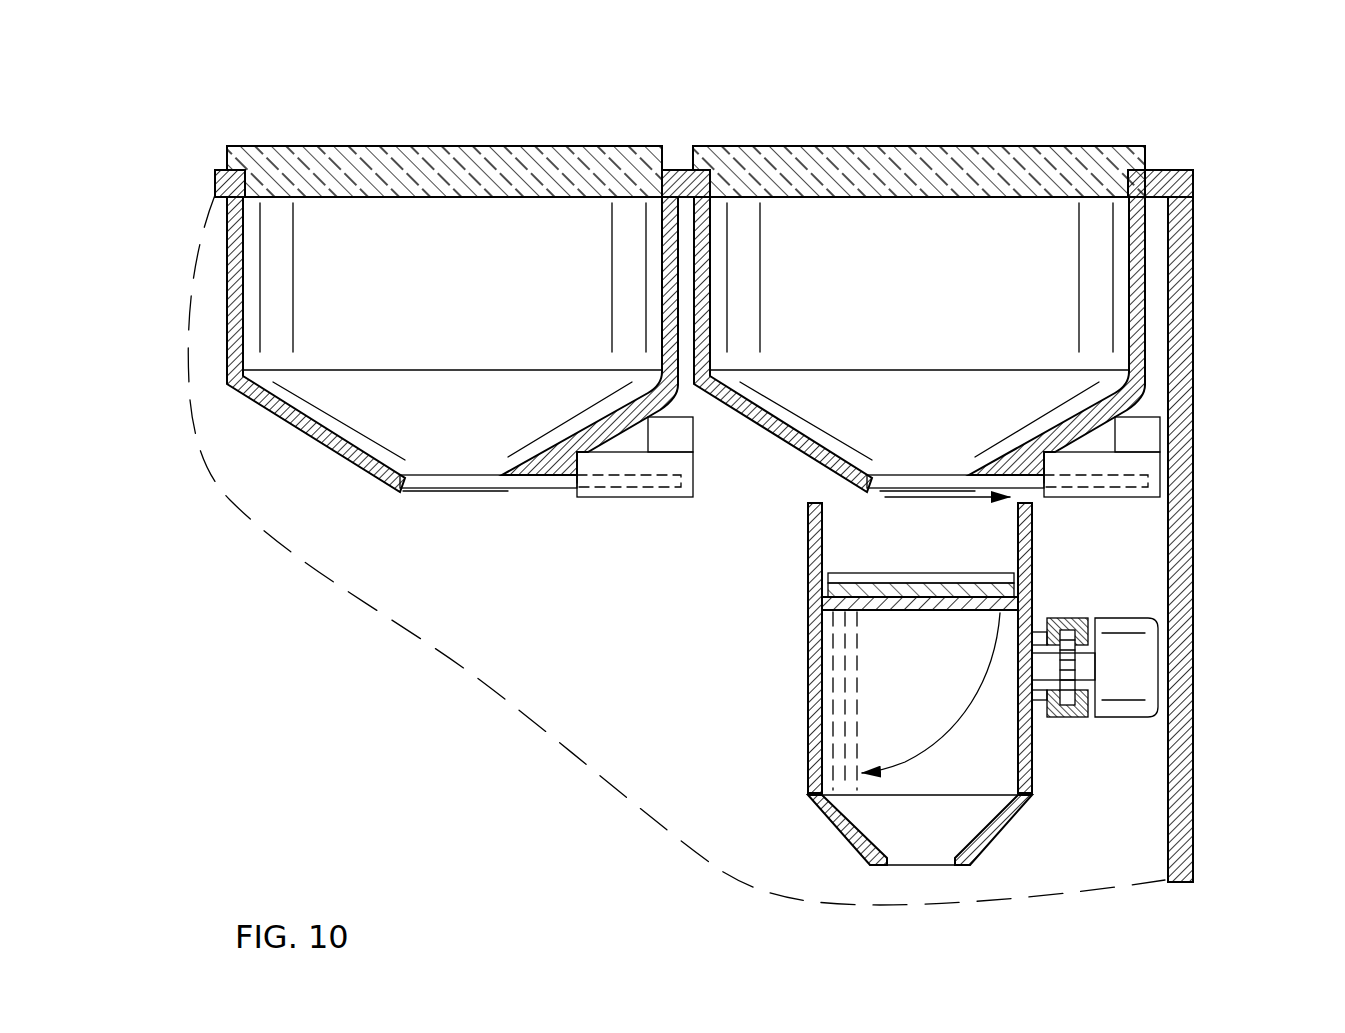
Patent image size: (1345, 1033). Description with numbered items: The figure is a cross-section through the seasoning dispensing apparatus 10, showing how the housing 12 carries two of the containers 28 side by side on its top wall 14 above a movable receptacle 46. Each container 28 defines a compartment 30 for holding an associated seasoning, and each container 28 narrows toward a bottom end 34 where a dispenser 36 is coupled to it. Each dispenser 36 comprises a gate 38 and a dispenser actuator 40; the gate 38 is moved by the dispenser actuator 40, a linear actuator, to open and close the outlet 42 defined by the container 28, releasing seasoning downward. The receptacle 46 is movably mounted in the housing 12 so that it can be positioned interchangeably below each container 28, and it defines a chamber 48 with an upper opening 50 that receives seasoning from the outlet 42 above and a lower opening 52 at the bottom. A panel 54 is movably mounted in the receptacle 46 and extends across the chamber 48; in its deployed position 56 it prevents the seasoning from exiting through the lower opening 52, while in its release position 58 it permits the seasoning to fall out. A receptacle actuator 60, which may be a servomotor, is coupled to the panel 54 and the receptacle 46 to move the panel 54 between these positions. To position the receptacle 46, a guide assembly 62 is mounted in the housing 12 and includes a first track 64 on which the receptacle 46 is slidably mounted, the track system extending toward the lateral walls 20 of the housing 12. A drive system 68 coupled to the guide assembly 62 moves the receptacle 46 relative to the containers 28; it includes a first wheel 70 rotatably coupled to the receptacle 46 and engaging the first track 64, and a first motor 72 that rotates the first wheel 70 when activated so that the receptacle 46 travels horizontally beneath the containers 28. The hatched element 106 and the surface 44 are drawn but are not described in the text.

The seasoning dispensing apparatus 10 is at (1220, 150).
The housing 12 is at (1232, 178).
The top wall 14 is at (1177, 170).
The lateral walls 20 is at (1193, 830).
The container 28 is at (330, 398).
The compartment 30 is at (288, 282).
The bottom end 34 is at (432, 492).
The dispenser 36 is at (596, 508).
The gate 38 is at (475, 488).
The dispenser actuator 40 is at (665, 465).
The outlet 42 is at (441, 462).
The hopper inner surface 44 is at (380, 205).
The receptacle 46 is at (808, 733).
The chamber 48 is at (937, 759).
The upper opening 50 is at (838, 495).
The lower opening 52 is at (919, 872).
The panel 54 is at (910, 612).
The deployed position 56 is at (1047, 573).
The release position 58 is at (798, 768).
The receptacle actuator 60 is at (810, 637).
The guide assembly 62 is at (1080, 728).
The first track 64 is at (1057, 728).
The drive system 68 is at (1131, 724).
The first wheel 70 is at (1070, 668).
The first motor 72 is at (1132, 647).
The top plate 106 is at (323, 160).